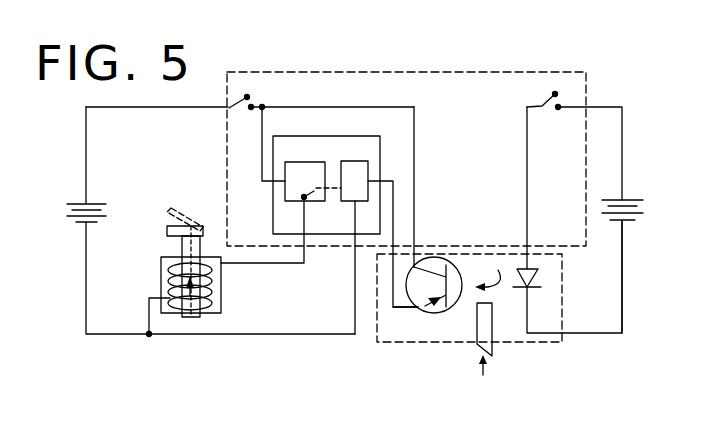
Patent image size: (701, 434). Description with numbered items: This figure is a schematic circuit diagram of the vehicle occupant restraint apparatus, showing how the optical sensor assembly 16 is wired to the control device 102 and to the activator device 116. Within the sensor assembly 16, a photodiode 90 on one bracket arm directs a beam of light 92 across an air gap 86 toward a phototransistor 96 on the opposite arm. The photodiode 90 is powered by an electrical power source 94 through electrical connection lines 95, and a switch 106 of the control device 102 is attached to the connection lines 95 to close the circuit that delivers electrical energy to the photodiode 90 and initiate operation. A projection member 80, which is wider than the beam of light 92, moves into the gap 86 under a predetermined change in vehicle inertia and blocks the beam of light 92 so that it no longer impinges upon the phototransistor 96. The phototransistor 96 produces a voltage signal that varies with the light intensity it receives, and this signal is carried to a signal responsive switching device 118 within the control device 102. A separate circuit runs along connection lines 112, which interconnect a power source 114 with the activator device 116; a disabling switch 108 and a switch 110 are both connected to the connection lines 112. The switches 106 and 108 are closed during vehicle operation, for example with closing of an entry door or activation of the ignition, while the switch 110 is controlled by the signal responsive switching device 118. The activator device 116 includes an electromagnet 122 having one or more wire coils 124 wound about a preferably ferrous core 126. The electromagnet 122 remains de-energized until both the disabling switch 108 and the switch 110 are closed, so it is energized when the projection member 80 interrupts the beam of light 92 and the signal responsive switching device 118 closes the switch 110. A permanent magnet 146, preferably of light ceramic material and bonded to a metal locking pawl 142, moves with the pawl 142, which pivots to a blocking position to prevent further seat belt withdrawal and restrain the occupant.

The sensor assembly 16 is at (421, 343).
The projection member 80 is at (492, 345).
The air gap 86 is at (473, 295).
The photodiode 90 is at (540, 280).
The beam of light 92 is at (483, 274).
The electrical power source 94 is at (633, 198).
The electrical connection lines 95 is at (623, 255).
The phototransistor 96 is at (425, 306).
The control device 102 is at (382, 73).
The switch 106 is at (547, 100).
The disabling switch 108 is at (240, 95).
The switch 110 is at (285, 192).
The connection lines 112 is at (85, 167).
The power source 114 is at (75, 203).
The activator device 116 is at (161, 274).
The signal responsive switching device 118 is at (356, 167).
The electromagnet 122 is at (222, 305).
The wire coils 124 is at (212, 280).
The core 126 is at (183, 312).
The locking pawl 142 is at (168, 230).
The permanent magnet 146 is at (177, 239).